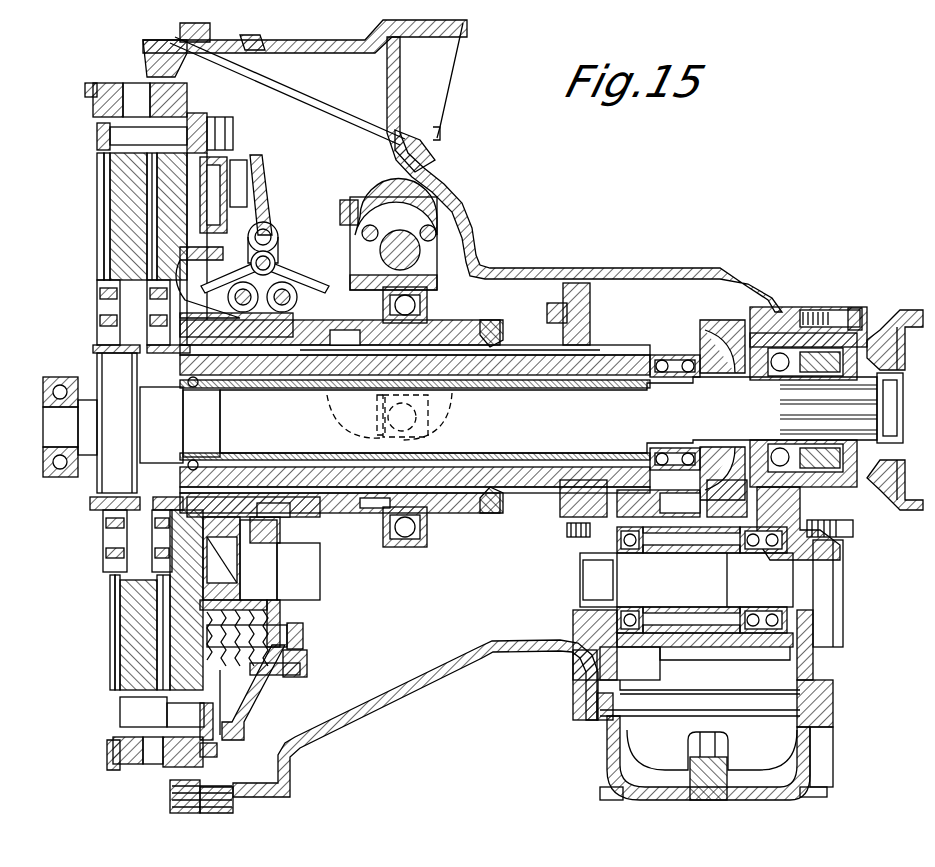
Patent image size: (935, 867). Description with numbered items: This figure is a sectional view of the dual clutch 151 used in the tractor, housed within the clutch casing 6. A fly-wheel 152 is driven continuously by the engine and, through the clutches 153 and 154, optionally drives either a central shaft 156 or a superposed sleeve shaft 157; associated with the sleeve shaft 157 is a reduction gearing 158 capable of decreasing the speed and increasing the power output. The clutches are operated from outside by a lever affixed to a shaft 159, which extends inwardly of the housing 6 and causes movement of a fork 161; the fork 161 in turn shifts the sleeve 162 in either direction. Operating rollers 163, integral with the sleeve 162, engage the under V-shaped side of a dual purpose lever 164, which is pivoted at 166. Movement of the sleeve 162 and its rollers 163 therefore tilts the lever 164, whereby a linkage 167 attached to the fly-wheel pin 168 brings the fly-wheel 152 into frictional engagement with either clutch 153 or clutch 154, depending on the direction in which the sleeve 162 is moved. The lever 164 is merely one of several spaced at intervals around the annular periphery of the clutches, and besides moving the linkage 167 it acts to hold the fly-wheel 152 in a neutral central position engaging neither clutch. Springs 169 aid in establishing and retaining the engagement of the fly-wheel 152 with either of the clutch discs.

The clutch casing 6 is at (575, 268).
The dual clutch 151 is at (505, 266).
The fly-wheel 152 is at (100, 172).
The clutch 153 is at (100, 212).
The clutch 154 is at (143, 227).
The central shaft 156 is at (300, 425).
The sleeve shaft 157 is at (540, 480).
The reduction gearing 158 is at (610, 583).
The shaft 159 is at (420, 250).
The fork 161 is at (450, 400).
The sleeve 162 is at (342, 332).
The operating rollers 163 is at (262, 295).
The dual purpose lever 164 is at (215, 290).
The pivot 166 is at (280, 254).
The linkage 167 is at (262, 166).
The fly-wheel pin 168 is at (187, 101).
The springs 169 is at (263, 690).